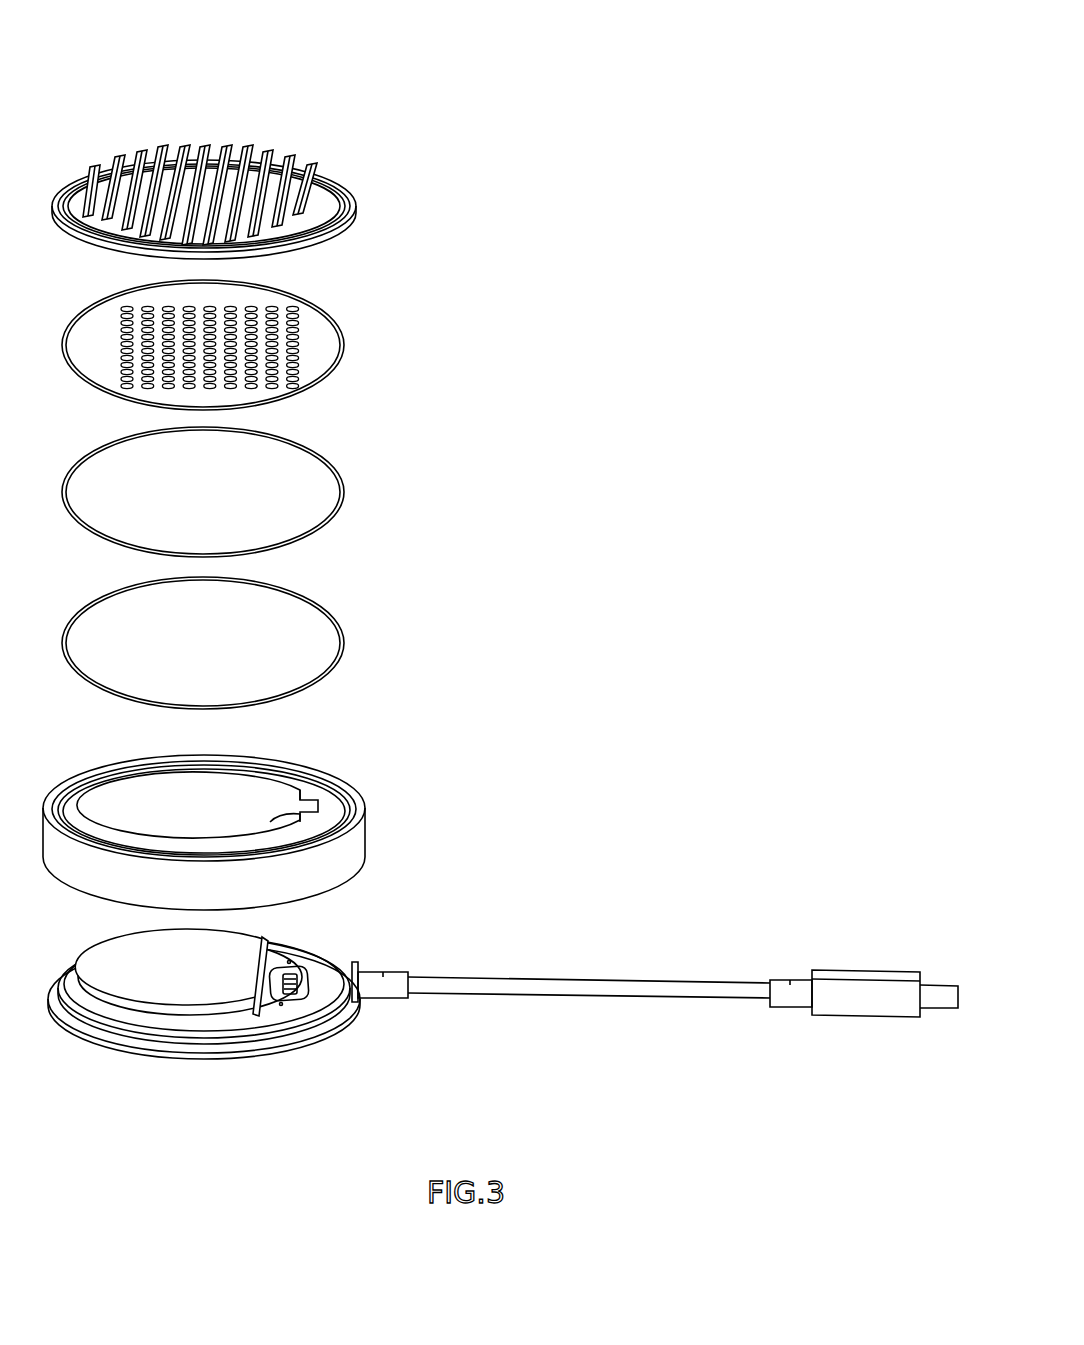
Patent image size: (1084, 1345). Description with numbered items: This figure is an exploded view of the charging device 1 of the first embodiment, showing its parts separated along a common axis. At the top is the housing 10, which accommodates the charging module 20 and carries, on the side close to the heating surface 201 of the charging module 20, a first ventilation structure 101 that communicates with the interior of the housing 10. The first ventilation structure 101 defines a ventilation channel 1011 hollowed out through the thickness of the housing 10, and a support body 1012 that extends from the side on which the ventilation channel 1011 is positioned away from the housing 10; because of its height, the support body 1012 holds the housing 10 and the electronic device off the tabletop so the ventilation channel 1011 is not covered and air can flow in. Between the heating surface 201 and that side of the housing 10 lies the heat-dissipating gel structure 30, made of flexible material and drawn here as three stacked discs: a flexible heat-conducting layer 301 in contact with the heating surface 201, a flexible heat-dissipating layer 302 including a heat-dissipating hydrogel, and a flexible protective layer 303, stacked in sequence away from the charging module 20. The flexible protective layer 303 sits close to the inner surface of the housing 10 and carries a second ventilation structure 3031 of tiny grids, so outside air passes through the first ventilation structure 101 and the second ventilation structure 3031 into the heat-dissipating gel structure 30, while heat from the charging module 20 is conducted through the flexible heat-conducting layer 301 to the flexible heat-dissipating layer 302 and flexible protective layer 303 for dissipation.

The charging device 1 is at (482, 62).
The housing 10 is at (367, 199).
The first ventilation structure 101 is at (367, 189).
The ventilation channel 1011 is at (330, 195).
The support body 1012 is at (305, 165).
The heat-dissipating gel structure 30 is at (365, 494).
The flexible protective layer 303 is at (334, 369).
The second ventilation structure 3031 is at (292, 386).
The flexible heat-dissipating layer 302 is at (298, 489).
The flexible heat-conducting layer 301 is at (330, 643).
The charging module 20 is at (503, 1009).
The heating surface 201 is at (230, 958).